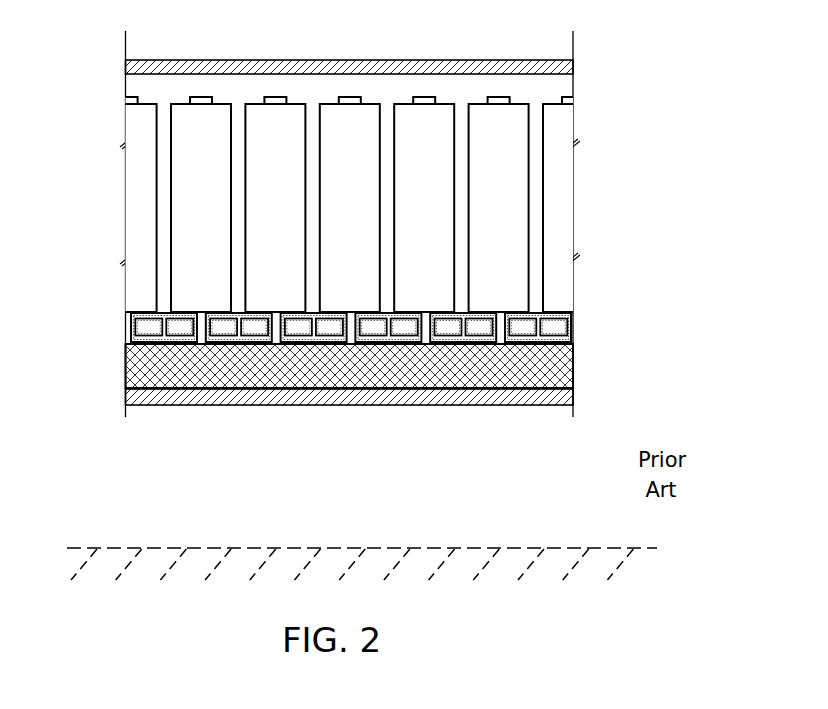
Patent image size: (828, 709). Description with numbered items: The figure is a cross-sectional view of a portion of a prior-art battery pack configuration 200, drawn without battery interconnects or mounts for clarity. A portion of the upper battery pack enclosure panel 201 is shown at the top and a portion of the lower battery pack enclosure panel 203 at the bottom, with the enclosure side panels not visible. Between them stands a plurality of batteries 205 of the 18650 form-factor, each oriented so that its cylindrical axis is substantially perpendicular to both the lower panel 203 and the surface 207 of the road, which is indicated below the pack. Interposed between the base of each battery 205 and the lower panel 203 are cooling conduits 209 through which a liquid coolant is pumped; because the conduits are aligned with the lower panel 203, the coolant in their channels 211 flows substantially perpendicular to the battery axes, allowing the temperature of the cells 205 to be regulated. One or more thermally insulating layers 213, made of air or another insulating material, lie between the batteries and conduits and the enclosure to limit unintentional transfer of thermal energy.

The battery pack configuration 200 is at (626, 48).
The upper battery pack enclosure panel 201 is at (247, 62).
The lower battery pack enclosure panel 203 is at (397, 393).
The batteries 205 is at (350, 204).
The surface of the road 207 is at (340, 543).
The cooling conduits 209 is at (235, 313).
The channels 211 is at (447, 330).
The thermally insulating layers 213 is at (133, 373).